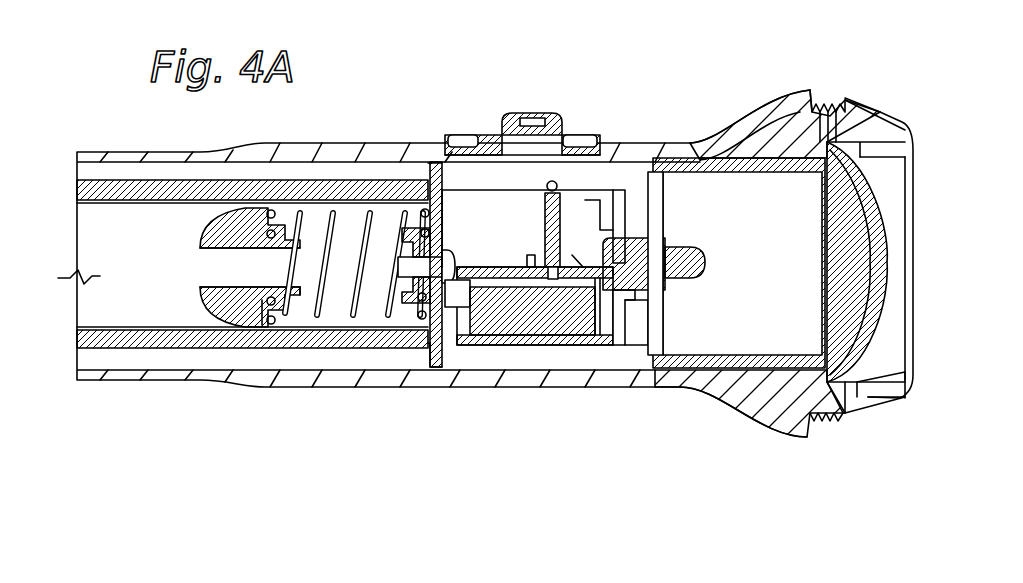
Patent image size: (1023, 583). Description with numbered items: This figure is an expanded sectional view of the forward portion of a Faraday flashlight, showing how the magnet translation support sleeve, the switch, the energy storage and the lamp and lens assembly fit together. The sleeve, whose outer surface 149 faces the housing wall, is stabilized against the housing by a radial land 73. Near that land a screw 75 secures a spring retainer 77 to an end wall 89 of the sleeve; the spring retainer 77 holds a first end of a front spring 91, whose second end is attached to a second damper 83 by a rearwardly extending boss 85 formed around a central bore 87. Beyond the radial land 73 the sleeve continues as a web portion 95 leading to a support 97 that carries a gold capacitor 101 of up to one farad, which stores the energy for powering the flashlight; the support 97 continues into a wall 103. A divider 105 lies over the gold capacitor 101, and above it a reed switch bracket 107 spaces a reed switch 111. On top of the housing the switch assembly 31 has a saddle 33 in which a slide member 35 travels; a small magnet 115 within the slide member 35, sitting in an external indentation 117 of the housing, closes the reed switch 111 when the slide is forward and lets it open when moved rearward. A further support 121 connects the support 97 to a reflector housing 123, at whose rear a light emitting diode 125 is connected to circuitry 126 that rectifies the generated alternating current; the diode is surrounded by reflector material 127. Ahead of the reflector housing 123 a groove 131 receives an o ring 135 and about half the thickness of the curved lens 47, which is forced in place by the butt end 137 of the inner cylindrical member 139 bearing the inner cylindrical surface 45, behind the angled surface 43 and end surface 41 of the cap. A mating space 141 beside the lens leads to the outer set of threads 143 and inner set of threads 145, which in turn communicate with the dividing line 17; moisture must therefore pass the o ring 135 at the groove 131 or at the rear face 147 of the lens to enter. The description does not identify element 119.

The dividing line 17 is at (808, 437).
The switch assembly 31 is at (520, 100).
The saddle 33 is at (450, 150).
The slide member 35 is at (565, 155).
The end surface 41 is at (908, 380).
The angled surface 43 is at (905, 350).
The inner cylindrical surface 45 is at (902, 330).
The curved lens 47 is at (912, 272).
The radial land 73 is at (428, 163).
The screw 75 is at (453, 258).
The spring retainer 77 is at (402, 322).
The second damper 83 is at (240, 312).
The rearwardly extending boss 85 is at (300, 300).
The central bore 87 is at (225, 255).
The end wall 89 is at (442, 227).
The front spring 91 is at (318, 210).
The web portion 95 is at (448, 308).
The support 97 is at (590, 346).
The gold capacitor 101 is at (563, 310).
The wall 103 is at (602, 215).
The divider 105 is at (507, 272).
The reed switch bracket 107 is at (628, 195).
The reed switch 111 is at (585, 200).
The small magnet 115 is at (547, 133).
The external indentation 117 is at (467, 153).
The ball detent 119 is at (547, 193).
The further support 121 is at (632, 340).
The reflector housing 123 is at (682, 373).
The light emitting diode 125 is at (712, 268).
The circuitry 126 is at (668, 288).
The reflector material 127 is at (665, 195).
The groove 131 is at (813, 130).
The o ring 135 is at (888, 195).
The butt end 137 is at (846, 140).
The inner cylindrical member 139 is at (873, 150).
The mating space 141 is at (868, 397).
The outer set of threads 143 is at (835, 110).
The inner set of threads 145 is at (803, 123).
The rear face 147 is at (722, 160).
The outer surface 149 is at (172, 172).